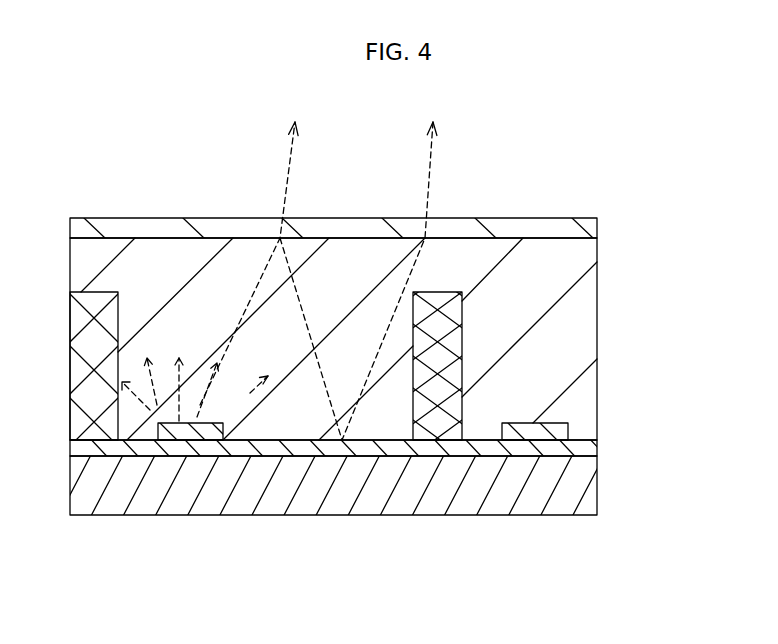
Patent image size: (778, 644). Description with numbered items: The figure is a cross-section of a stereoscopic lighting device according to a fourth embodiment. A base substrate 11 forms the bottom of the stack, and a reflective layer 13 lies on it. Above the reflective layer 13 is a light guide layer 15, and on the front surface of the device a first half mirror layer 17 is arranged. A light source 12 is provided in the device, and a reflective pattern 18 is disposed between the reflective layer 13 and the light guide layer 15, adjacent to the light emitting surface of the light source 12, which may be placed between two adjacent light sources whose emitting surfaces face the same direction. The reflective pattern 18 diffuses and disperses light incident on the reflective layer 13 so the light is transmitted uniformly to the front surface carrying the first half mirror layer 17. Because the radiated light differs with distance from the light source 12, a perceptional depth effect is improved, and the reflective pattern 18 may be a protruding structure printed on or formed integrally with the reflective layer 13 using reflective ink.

The base substrate 11 is at (579, 488).
The light source 12 is at (110, 442).
The reflective layer 13 is at (586, 446).
The light guide layer 15 is at (571, 307).
The first half mirror layer 17 is at (597, 221).
The reflective pattern 18 is at (192, 442).